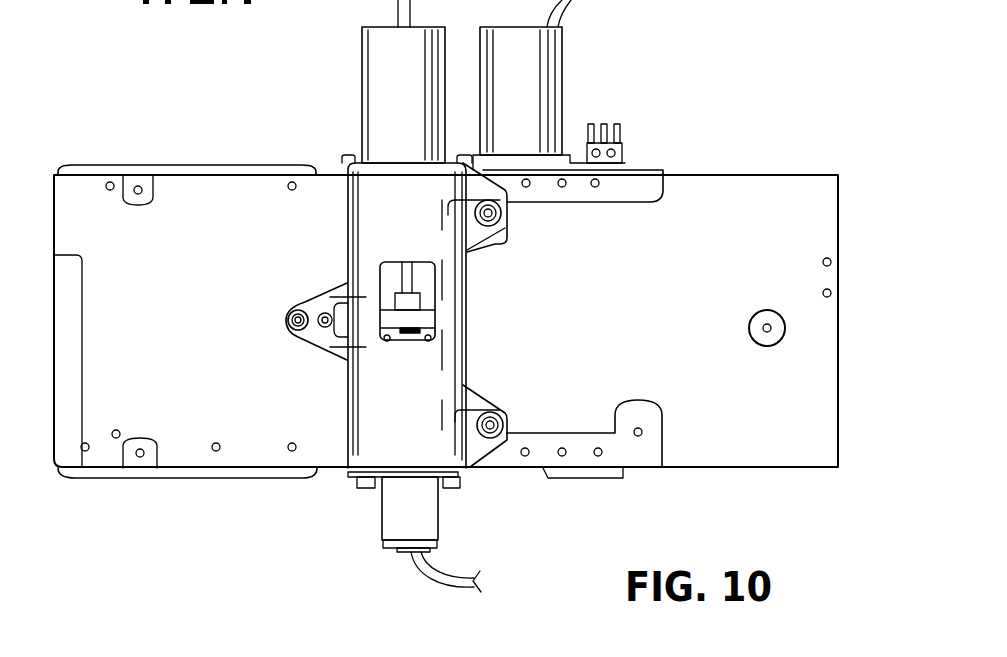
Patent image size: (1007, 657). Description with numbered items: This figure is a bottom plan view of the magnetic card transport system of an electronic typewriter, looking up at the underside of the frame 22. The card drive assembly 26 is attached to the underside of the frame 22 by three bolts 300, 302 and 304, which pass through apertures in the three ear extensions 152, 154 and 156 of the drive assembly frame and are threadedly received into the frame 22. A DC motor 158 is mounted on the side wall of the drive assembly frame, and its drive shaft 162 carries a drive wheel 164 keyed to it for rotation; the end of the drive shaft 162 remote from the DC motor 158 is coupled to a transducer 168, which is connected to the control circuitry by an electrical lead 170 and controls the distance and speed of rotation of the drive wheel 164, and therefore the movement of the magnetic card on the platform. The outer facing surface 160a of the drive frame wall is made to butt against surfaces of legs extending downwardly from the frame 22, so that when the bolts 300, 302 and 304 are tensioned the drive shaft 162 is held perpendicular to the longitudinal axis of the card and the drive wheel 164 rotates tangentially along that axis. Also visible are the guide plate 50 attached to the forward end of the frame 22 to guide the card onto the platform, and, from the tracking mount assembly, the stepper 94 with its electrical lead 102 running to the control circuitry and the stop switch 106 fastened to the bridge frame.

The frame 22 is at (803, 447).
The card drive assembly 26 is at (332, 397).
The guide plate 50 is at (165, 471).
The stepper 94 is at (538, 60).
The electrical lead 102 is at (607, 0).
The stop switch 106 is at (618, 152).
The ear extension 152 is at (502, 410).
The ear extension 154 is at (508, 198).
The ear extension 156 is at (315, 300).
The DC motor 158 is at (385, 67).
The outer facing surface 160a is at (338, 178).
The drive shaft 162 is at (428, 333).
The drive wheel 164 is at (422, 318).
The transducer 168 is at (398, 518).
The electrical lead 170 is at (447, 568).
The bolt 300 is at (503, 424).
The bolt 302 is at (497, 226).
The bolt 304 is at (289, 318).